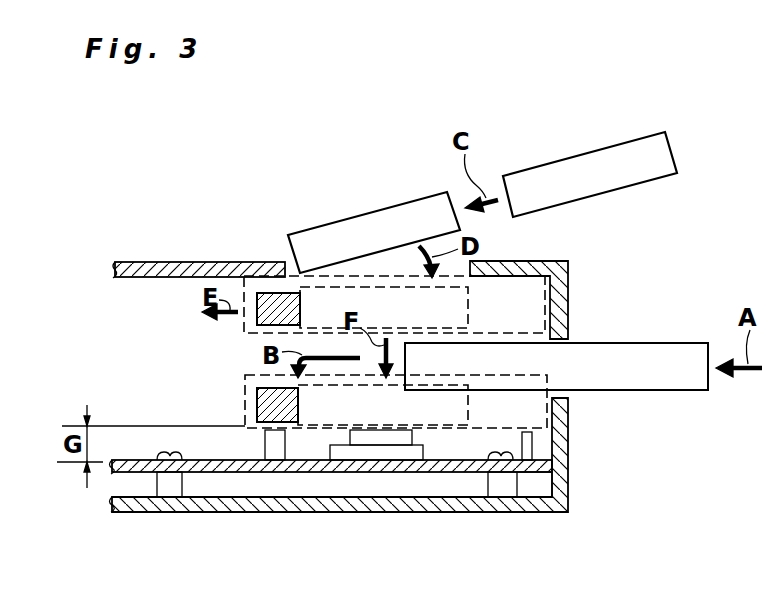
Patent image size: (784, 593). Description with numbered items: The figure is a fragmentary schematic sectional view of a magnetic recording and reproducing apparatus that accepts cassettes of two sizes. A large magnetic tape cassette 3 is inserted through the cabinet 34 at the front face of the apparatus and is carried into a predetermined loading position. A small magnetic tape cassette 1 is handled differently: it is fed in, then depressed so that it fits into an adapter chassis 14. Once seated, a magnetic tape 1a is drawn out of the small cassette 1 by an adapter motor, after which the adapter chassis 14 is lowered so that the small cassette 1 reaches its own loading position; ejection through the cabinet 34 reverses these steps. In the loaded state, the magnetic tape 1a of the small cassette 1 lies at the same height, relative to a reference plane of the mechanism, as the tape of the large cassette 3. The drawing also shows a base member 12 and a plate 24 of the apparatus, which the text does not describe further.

The small magnetic tape cassette 1 is at (597, 163).
The magnetic tape 1a is at (272, 400).
The large magnetic tape cassette 3 is at (668, 378).
The base plate 12 is at (128, 468).
The adapter chassis 14 is at (245, 335).
The cover plate 24 is at (133, 262).
The cabinet 34 is at (568, 280).